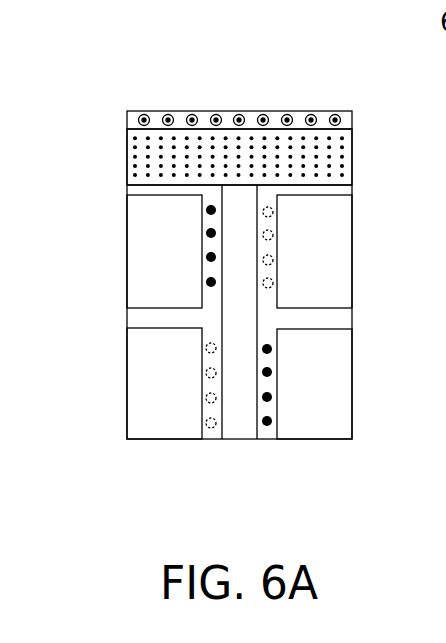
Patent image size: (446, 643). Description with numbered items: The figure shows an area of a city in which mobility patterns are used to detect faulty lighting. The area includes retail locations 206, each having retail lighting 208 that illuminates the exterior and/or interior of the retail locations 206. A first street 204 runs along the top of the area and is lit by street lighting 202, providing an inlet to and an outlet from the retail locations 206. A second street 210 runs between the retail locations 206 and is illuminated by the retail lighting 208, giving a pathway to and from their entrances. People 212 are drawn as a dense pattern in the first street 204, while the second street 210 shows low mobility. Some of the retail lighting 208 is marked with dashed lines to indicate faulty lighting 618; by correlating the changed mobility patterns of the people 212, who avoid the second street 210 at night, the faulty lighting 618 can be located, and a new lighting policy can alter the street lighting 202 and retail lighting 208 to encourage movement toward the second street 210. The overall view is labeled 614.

The heat exchanger / device 614 is at (113, 70).
The street lighting 202 is at (212, 114).
The first street 204 is at (233, 134).
The people 212 is at (160, 165).
The retail locations 206 is at (180, 263).
The retail lighting 208 is at (207, 258).
The second street 210 is at (243, 428).
The faulty lighting 618 is at (215, 346).